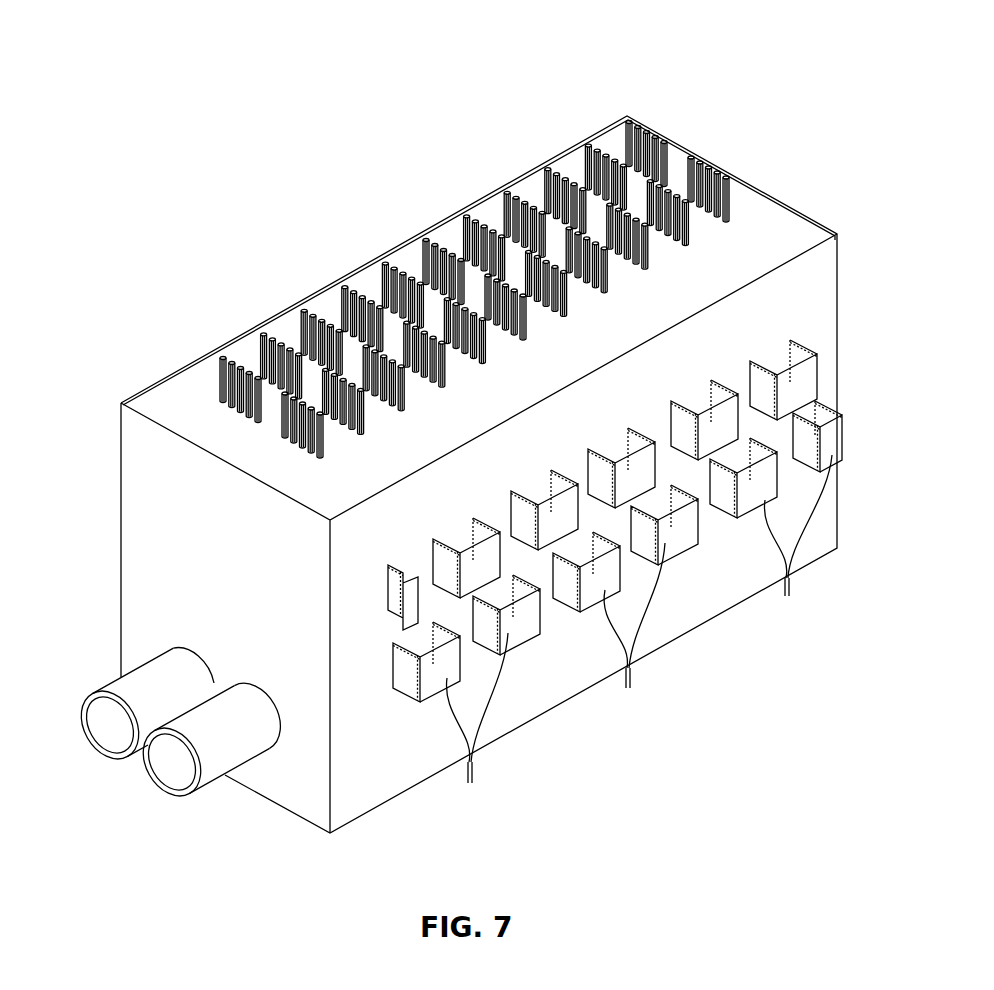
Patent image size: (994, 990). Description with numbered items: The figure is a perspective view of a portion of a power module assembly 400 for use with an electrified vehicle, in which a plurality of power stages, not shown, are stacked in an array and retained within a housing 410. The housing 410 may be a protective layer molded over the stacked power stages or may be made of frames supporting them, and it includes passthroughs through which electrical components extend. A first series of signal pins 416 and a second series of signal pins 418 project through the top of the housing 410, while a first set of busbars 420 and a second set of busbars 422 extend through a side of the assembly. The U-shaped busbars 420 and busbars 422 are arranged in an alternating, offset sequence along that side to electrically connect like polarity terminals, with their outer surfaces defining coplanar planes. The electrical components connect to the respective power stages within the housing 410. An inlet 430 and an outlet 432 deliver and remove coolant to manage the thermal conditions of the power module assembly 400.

The power module assembly 400 is at (210, 172).
The housing 410 is at (598, 126).
The first series of signal pins 416 is at (212, 390).
The second series of signal pins 418 is at (284, 451).
The first set of busbars 420 is at (472, 560).
The second set of busbars 422 is at (639, 632).
The inlet 430 is at (115, 683).
The outlet 432 is at (210, 773).